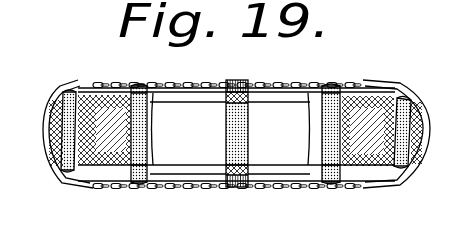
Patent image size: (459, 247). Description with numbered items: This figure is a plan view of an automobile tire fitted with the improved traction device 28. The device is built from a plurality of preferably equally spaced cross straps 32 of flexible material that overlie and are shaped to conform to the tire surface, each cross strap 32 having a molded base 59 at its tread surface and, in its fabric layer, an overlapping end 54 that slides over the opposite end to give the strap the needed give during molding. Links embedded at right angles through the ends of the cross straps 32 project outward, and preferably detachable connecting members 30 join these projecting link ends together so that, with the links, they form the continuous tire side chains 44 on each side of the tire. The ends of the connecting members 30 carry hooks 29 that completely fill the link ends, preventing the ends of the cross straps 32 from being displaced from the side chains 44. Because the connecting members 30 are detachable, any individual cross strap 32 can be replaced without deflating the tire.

The traction device 28 is at (113, 188).
The hooks 29 is at (327, 82).
The connecting members 30 is at (135, 82).
The cross straps 32 is at (146, 126).
The tire side chains 44 is at (345, 83).
The overlapping end 54 is at (226, 86).
The molded base 59 is at (332, 129).